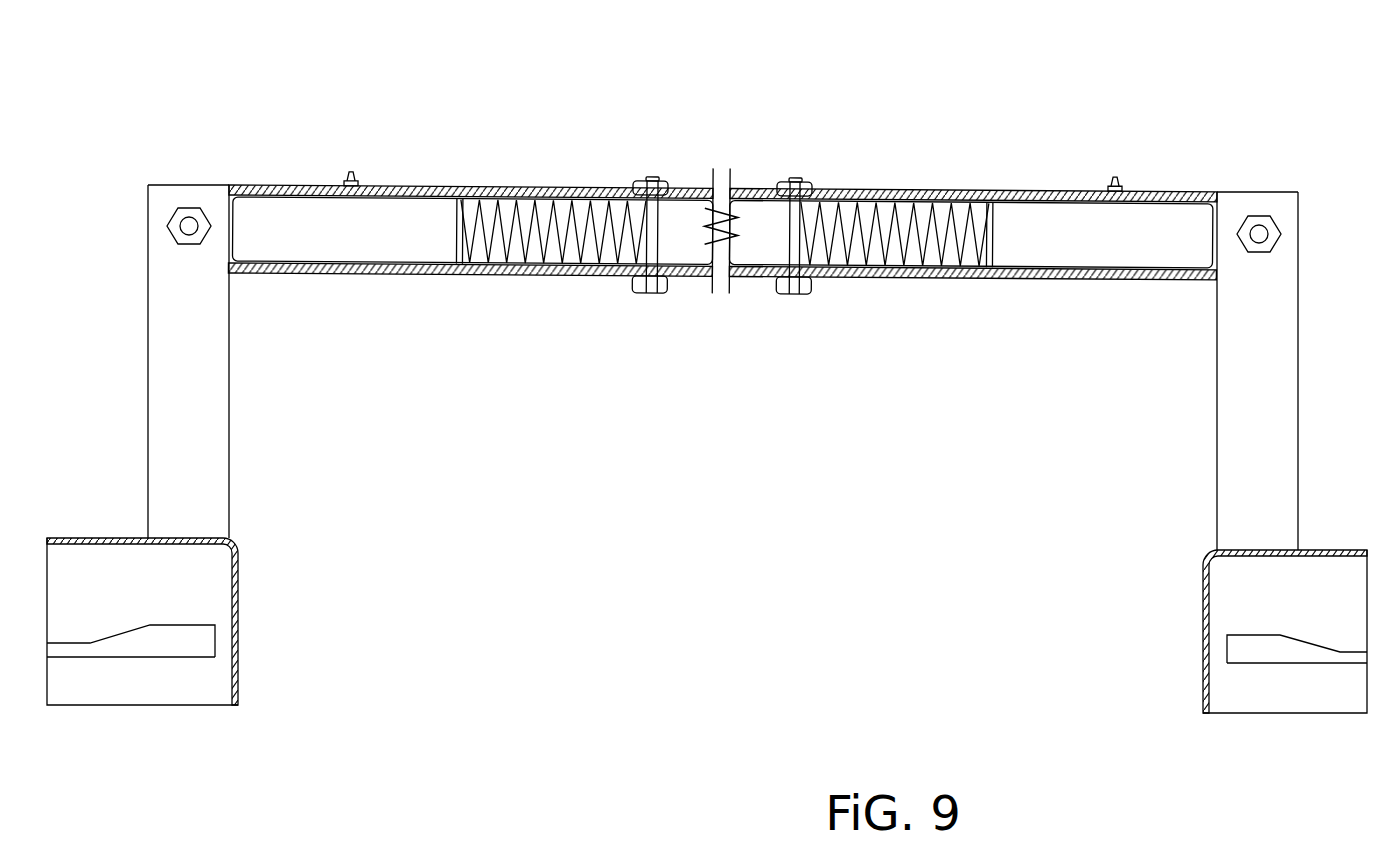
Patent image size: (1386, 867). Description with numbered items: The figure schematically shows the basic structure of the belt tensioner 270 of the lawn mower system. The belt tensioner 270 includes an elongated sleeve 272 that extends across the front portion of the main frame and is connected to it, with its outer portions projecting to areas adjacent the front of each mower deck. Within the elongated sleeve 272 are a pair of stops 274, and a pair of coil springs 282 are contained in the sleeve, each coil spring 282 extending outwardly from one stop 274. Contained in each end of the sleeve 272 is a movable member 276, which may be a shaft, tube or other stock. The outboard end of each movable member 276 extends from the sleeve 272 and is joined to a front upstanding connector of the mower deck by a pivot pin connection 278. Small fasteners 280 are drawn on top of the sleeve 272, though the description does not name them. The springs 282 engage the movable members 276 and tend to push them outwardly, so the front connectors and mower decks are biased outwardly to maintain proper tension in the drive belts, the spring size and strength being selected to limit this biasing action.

The belt tensioner 270 is at (857, 138).
The elongated sleeve 272 is at (432, 188).
The stop 274 is at (657, 228).
The movable member 276 is at (262, 215).
The pivot pin connection 278 is at (189, 224).
The bolt 280 is at (353, 178).
The coil spring 282 is at (535, 197).